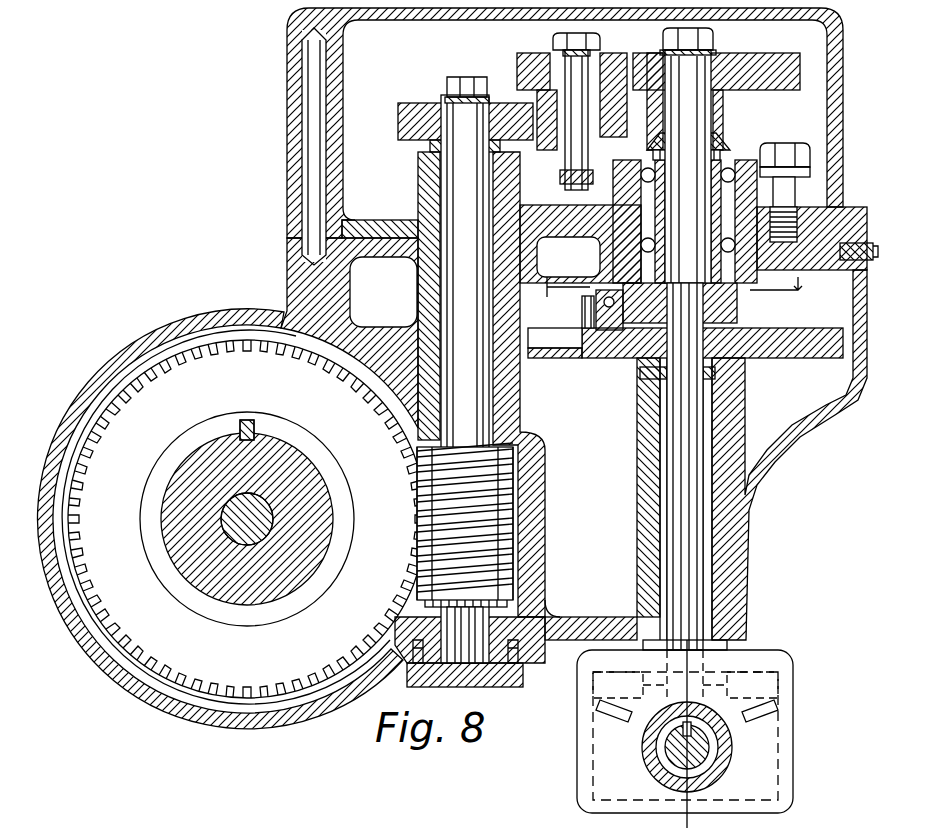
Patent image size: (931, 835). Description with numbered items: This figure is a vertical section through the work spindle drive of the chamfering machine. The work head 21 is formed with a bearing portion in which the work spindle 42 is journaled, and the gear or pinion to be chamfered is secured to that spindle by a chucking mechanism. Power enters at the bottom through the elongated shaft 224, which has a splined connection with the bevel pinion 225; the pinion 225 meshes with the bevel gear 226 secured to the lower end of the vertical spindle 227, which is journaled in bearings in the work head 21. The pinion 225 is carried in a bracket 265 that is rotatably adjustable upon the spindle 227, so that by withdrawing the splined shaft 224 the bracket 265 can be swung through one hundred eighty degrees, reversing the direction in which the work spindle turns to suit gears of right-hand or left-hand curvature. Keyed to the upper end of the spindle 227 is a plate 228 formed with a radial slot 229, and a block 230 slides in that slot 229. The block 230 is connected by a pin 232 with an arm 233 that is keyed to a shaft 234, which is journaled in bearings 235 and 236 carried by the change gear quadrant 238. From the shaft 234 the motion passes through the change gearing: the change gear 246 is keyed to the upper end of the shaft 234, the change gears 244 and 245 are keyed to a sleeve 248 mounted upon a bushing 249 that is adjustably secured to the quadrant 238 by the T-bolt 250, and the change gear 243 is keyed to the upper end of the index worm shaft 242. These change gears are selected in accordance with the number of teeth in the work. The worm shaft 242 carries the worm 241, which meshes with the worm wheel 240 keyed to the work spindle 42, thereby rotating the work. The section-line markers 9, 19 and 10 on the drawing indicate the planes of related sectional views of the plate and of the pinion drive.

The work head 21 is at (790, 452).
The worm wheel 240 is at (230, 682).
The work spindle 42 is at (310, 488).
The worm 241 is at (512, 515).
The worm shaft 242 is at (460, 326).
The change gear 243 is at (417, 110).
The change gear 244 is at (598, 130).
The change gear 245 is at (525, 72).
The change gear 246 is at (770, 62).
The sleeve 248 is at (557, 45).
The bushing 249 is at (612, 58).
The T-bolt 250 is at (600, 40).
The spindle 227 is at (700, 588).
The plate 228 is at (796, 350).
The radial slot 229 is at (552, 333).
The block 230 is at (630, 358).
The pin 232 is at (582, 360).
The arm 233 is at (737, 310).
The shaft 234 is at (613, 255).
The bearing 235 is at (737, 158).
The bearing 236 is at (757, 248).
The change gear quadrant 238 is at (810, 148).
The section line 9 is at (776, 290).
The section line 19 is at (568, 293).
The bracket 265 is at (783, 665).
The bevel gear 226 is at (760, 708).
The elongated shaft 224 is at (730, 768).
The bevel pinion 225 is at (650, 765).
The axis 10 is at (686, 729).